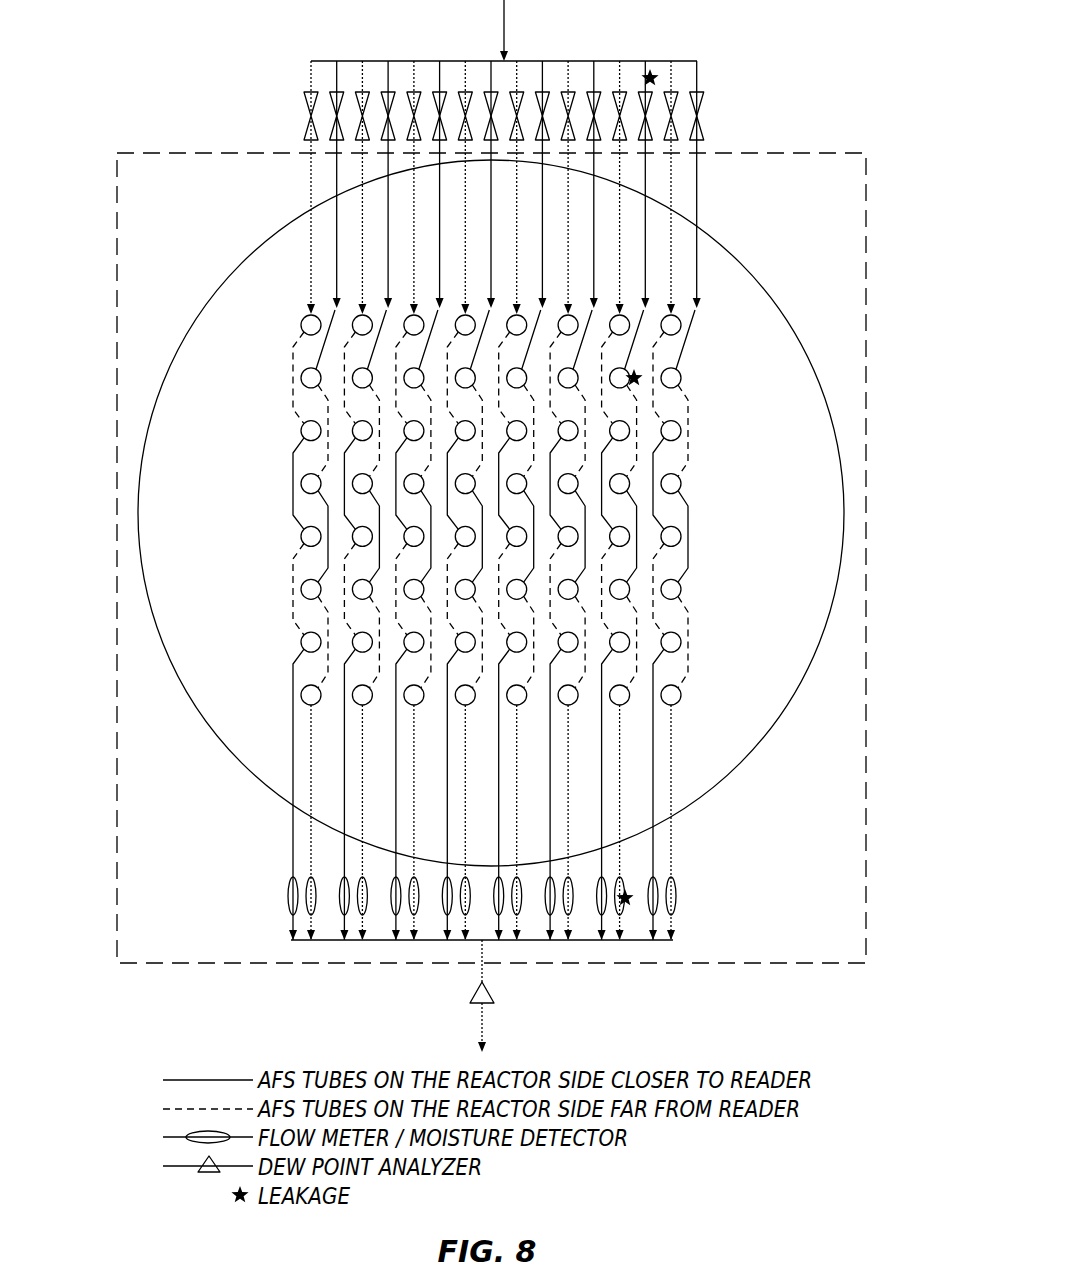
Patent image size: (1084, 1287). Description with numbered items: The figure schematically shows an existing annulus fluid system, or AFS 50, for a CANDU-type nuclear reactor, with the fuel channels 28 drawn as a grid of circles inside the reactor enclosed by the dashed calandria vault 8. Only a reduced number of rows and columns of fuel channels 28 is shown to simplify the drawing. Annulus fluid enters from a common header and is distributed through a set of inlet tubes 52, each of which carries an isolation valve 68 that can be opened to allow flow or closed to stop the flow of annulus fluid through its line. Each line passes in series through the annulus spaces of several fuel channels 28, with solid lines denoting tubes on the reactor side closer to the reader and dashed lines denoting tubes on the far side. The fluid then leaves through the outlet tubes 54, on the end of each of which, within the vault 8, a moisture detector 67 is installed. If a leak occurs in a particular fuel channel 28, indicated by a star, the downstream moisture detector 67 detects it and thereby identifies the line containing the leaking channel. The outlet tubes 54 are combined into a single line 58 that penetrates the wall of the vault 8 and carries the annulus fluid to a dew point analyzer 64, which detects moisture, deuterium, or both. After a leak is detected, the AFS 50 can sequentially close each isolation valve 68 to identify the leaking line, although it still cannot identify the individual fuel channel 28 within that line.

The calandria vault 8 is at (116, 218).
The fuel channel 28 is at (680, 425).
The annulus fluid system 50 is at (852, 72).
The inlet tube 52 is at (616, 48).
The outlet tube 54 is at (590, 955).
The single line 58 is at (481, 965).
The dew point analyzer 64 is at (470, 1008).
The moisture detector 67 is at (309, 884).
The isolation valve 68 is at (335, 91).